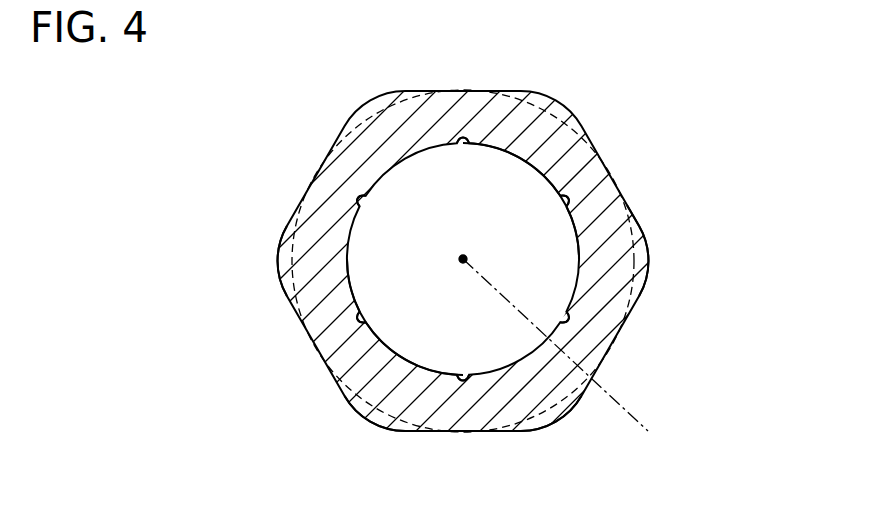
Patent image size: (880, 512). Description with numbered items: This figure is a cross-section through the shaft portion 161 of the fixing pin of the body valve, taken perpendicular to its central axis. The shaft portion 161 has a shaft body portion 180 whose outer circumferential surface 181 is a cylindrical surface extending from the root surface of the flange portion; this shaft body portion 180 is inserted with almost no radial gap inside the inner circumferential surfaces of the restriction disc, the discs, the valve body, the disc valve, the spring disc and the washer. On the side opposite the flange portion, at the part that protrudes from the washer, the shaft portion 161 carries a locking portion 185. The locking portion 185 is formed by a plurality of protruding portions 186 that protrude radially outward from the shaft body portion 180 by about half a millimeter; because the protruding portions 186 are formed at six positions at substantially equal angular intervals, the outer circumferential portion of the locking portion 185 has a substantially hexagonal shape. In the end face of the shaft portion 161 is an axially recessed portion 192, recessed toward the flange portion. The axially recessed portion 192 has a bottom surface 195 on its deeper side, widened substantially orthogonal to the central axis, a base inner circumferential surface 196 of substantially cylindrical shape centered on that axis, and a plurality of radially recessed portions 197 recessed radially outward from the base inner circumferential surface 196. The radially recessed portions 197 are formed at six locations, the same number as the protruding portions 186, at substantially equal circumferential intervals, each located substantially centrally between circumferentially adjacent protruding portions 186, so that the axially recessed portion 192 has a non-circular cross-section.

The shaft portion 161 is at (543, 130).
The shaft body portion 180 is at (613, 170).
The outer circumferential surface 181 is at (612, 340).
The locking portion 185 is at (652, 247).
The protruding portions 186 is at (276, 260).
The axially recessed portion 192 is at (533, 168).
The bottom surface 195 is at (420, 210).
The base inner circumferential surface 196 is at (347, 259).
The radially recessed portions 197 is at (463, 145).